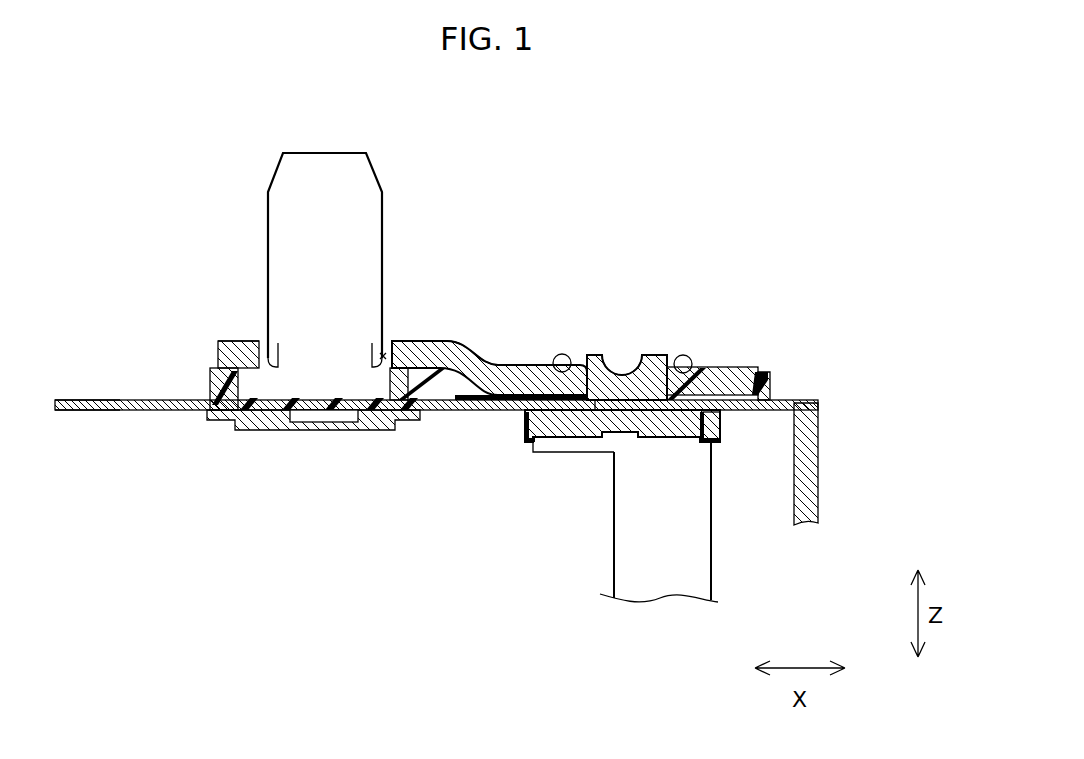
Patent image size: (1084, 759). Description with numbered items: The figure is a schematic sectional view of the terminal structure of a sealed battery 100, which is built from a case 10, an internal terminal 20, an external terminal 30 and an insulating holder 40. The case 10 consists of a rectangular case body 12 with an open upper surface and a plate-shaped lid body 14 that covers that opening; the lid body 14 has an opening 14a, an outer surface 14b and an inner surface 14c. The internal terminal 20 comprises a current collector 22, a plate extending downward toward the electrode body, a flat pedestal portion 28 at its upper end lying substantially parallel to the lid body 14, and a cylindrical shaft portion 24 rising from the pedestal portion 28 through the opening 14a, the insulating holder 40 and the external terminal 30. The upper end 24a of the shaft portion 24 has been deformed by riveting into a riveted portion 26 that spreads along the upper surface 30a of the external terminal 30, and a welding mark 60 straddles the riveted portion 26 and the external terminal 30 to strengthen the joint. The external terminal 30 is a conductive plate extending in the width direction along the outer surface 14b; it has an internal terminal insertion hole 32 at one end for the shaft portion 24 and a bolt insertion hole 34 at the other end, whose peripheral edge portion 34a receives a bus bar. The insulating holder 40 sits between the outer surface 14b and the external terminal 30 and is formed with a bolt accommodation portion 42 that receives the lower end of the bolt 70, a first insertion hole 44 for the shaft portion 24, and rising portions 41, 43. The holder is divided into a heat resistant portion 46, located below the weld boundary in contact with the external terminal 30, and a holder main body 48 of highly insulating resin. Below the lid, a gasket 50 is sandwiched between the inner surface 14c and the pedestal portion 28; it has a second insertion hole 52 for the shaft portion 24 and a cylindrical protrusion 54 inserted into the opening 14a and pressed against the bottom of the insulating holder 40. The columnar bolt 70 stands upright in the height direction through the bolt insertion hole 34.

The sealed battery 100 is at (182, 108).
The case 10 is at (897, 365).
The case body 12 is at (820, 443).
The lid body 14 is at (788, 403).
The opening 14a is at (560, 442).
The outer surface 14b is at (112, 400).
The inner surface 14c is at (103, 410).
The internal terminal 20 is at (604, 556).
The current collector 22 is at (705, 577).
The shaft portion 24 is at (614, 355).
The upper end 24a is at (630, 360).
The riveted portion 26 is at (668, 358).
The pedestal portion 28 is at (530, 442).
The external terminal 30 is at (430, 341).
The upper surface 30a is at (458, 346).
The internal terminal insertion hole 32 is at (592, 392).
The bolt insertion hole 34 is at (386, 356).
The peripheral edge portion 34a is at (235, 341).
The insulating holder 40 is at (208, 390).
The rising portion 41 is at (212, 367).
The bolt accommodation portion 42 is at (268, 412).
The rising portion 43 is at (770, 385).
The first insertion hole 44 is at (592, 445).
The heat resistant portion 46 is at (525, 414).
The holder main body 48 is at (432, 422).
The gasket 50 is at (722, 420).
The second insertion hole 52 is at (716, 445).
The protrusion 54 is at (712, 425).
The welding mark 60 is at (555, 358).
The bolt 70 is at (278, 223).